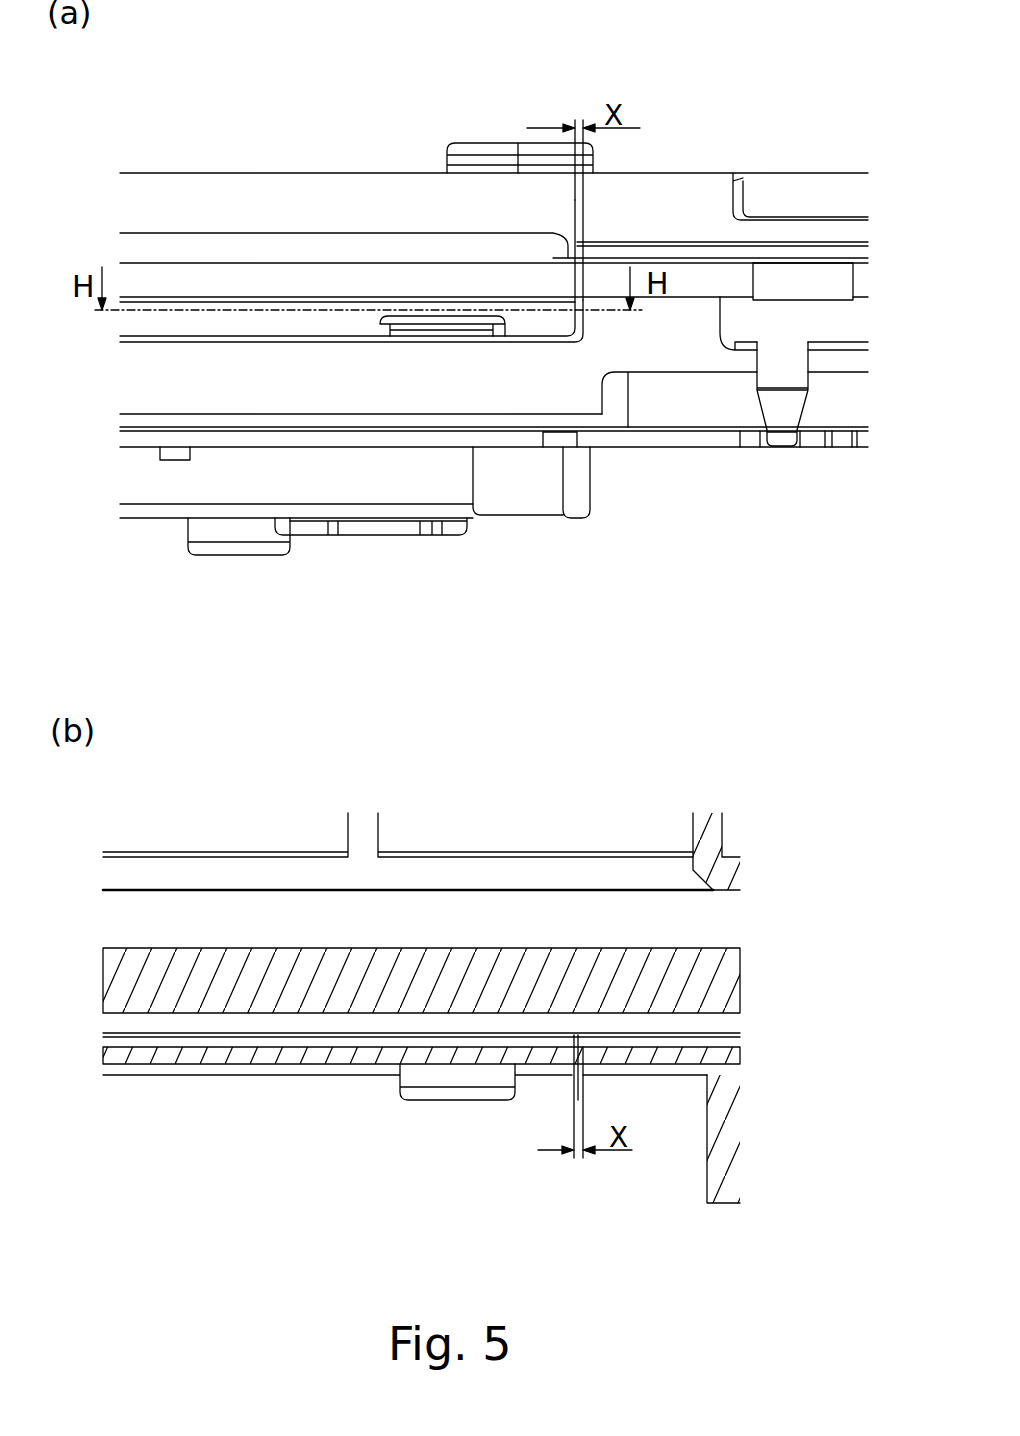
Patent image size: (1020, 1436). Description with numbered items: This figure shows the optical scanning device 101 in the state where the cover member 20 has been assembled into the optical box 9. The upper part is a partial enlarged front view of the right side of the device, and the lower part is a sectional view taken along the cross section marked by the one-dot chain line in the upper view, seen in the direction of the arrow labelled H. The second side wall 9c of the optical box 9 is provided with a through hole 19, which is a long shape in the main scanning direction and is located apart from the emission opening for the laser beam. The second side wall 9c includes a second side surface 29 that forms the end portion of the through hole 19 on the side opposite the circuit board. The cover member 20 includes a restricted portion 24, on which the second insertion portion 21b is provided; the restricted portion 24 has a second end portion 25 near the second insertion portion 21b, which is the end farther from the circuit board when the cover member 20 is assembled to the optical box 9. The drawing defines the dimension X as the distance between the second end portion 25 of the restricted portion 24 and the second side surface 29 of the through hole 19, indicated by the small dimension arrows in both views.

The optical box 9 is at (188, 477).
The second side wall 9c is at (423, 375).
The through hole 19 is at (565, 337).
The cover member 20 is at (155, 197).
The second insertion portion 21b is at (405, 318).
The restricted portion 24 is at (278, 327).
The second end portion 25 is at (575, 310).
The second side surface 29 is at (585, 310).
The optical scanning device 101 is at (767, 165).